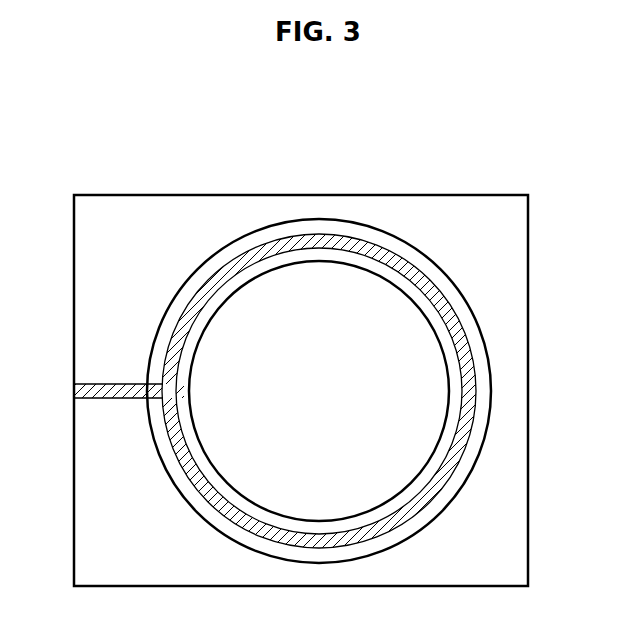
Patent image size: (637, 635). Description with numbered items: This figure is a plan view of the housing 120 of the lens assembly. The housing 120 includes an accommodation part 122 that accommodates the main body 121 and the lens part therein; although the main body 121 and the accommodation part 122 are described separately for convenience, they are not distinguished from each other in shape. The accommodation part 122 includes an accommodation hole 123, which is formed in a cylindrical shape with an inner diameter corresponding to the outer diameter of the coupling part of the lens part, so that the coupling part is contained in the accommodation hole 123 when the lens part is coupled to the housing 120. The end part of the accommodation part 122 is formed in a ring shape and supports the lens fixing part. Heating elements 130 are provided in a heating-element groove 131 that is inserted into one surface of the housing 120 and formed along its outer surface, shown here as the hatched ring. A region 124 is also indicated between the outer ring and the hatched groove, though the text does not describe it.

The housing 120 is at (531, 176).
The main body 121 is at (462, 222).
The accommodation part 122 is at (393, 233).
The accommodation hole 123 is at (250, 289).
The gap region 124 is at (207, 268).
The heating elements 130 is at (288, 236).
The heating-element groove 131 is at (322, 250).